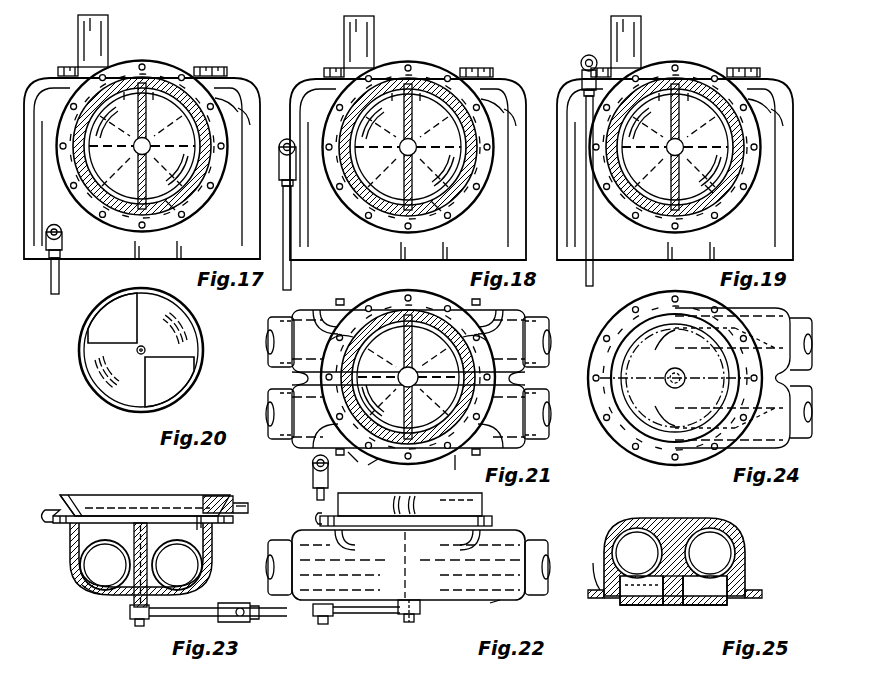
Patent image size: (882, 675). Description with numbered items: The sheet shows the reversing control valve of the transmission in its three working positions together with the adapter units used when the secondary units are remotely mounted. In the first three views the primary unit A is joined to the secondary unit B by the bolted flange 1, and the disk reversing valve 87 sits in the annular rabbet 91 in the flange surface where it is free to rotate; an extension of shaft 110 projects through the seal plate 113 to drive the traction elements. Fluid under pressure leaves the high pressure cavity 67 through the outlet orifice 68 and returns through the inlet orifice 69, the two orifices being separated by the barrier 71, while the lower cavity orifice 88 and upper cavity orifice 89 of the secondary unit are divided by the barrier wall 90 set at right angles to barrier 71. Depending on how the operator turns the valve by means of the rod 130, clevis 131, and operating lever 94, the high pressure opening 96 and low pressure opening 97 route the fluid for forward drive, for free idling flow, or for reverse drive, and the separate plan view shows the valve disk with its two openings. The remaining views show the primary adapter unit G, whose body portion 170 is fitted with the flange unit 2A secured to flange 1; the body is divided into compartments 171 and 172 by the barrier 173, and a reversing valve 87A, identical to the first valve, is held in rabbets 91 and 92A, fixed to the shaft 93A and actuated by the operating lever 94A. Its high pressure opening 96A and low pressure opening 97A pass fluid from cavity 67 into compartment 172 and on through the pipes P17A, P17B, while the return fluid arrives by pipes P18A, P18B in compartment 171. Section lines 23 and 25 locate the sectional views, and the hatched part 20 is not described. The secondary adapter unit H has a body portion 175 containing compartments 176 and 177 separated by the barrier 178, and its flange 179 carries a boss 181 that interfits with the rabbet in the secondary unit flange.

In FIG. 17, the flange 1 is at (226, 106).
In FIG. 18, the flange 1 is at (492, 106).
In FIG. 19, the flange 1 is at (752, 105).
In FIG. 21, the flange 1 is at (442, 307).
In FIG. 23, the flange 1 is at (58, 511).
In FIG. 22, the flange 1 is at (490, 519).
In FIG. 17, the primary unit A is at (240, 110).
In FIG. 18, the primary unit A is at (506, 110).
In FIG. 19, the primary unit A is at (766, 109).
In FIG. 23, the primary unit A is at (238, 504).
In FIG. 17, the secondary unit B is at (256, 128).
In FIG. 18, the secondary unit B is at (522, 128).
In FIG. 19, the secondary unit B is at (798, 127).
In FIG. 21, the flange unit 2A is at (422, 299).
In FIG. 23, the flange unit 2A is at (62, 523).
In FIG. 22, the flange unit 2A is at (508, 528).
In FIG. 23, the hatched block 20 is at (214, 496).
In FIG. 21, the section line 23 is at (407, 292).
In FIG. 23, the section line 23 is at (249, 493).
In FIG. 24, the section line 25 is at (675, 290).
In FIG. 23, the high pressure cavity 67 is at (106, 504).
In FIG. 22, the high pressure cavity 67 is at (324, 516).
In FIG. 17, the outlet orifice 68 is at (124, 92).
In FIG. 18, the outlet orifice 68 is at (392, 93).
In FIG. 19, the outlet orifice 68 is at (659, 100).
In FIG. 17, the inlet orifice 69 is at (153, 92).
In FIG. 18, the inlet orifice 69 is at (420, 93).
In FIG. 19, the inlet orifice 69 is at (688, 100).
In FIG. 22, the inlet orifice 69 is at (500, 507).
In FIG. 17, the barrier 71 is at (128, 114).
In FIG. 18, the barrier 71 is at (403, 122).
In FIG. 19, the barrier 71 is at (680, 132).
In FIG. 22, the barrier 71 is at (397, 507).
In FIG. 17, the reversing valve 87 is at (170, 103).
In FIG. 18, the reversing valve 87 is at (433, 103).
In FIG. 19, the reversing valve 87 is at (697, 98).
In FIG. 20, the reversing valve 87 is at (197, 313).
In FIG. 21, the reversing valve 87A is at (373, 352).
In FIG. 23, the reversing valve 87A is at (118, 514).
In FIG. 22, the reversing valve 87A is at (410, 559).
In FIG. 17, the lower cavity orifice 88 is at (120, 132).
In FIG. 18, the lower cavity orifice 88 is at (375, 131).
In FIG. 19, the lower cavity orifice 88 is at (652, 141).
In FIG. 17, the upper cavity orifice 89 is at (175, 210).
In FIG. 18, the upper cavity orifice 89 is at (441, 211).
In FIG. 19, the upper cavity orifice 89 is at (713, 193).
In FIG. 17, the barrier wall 90 is at (186, 151).
In FIG. 18, the barrier wall 90 is at (452, 152).
In FIG. 19, the barrier wall 90 is at (738, 153).
In FIG. 17, the annular rabbet 91 is at (214, 142).
In FIG. 18, the annular rabbet 91 is at (488, 141).
In FIG. 19, the annular rabbet 91 is at (740, 134).
In FIG. 23, the annular rabbet 91 is at (202, 515).
In FIG. 23, the annular rabbet 92A is at (196, 515).
In FIG. 23, the shaft 93A is at (137, 584).
In FIG. 22, the shaft 93A is at (414, 590).
In FIG. 17, the operating lever 94 is at (80, 217).
In FIG. 18, the operating lever 94 is at (300, 140).
In FIG. 19, the operating lever 94 is at (595, 100).
In FIG. 22, the operating lever 94A is at (358, 621).
In FIG. 17, the high pressure opening 96 is at (124, 158).
In FIG. 18, the high pressure opening 96 is at (393, 160).
In FIG. 19, the high pressure opening 96 is at (656, 134).
In FIG. 20, the high pressure opening 96 is at (98, 329).
In FIG. 21, the high pressure opening 96A is at (363, 398).
In FIG. 17, the low pressure opening 97 is at (190, 132).
In FIG. 18, the low pressure opening 97 is at (460, 137).
In FIG. 19, the low pressure opening 97 is at (725, 161).
In FIG. 20, the low pressure opening 97 is at (176, 381).
In FIG. 21, the low pressure opening 97A is at (467, 360).
In FIG. 17, the shaft 110 is at (107, 24).
In FIG. 18, the shaft 110 is at (375, 24).
In FIG. 19, the shaft 110 is at (641, 21).
In FIG. 17, the seal plate 113 is at (58, 73).
In FIG. 18, the seal plate 113 is at (326, 74).
In FIG. 19, the seal plate 113 is at (590, 74).
In FIG. 17, the rod 130 is at (62, 286).
In FIG. 18, the rod 130 is at (292, 277).
In FIG. 19, the rod 130 is at (595, 277).
In FIG. 21, the rod 130 is at (316, 499).
In FIG. 17, the clevis 131 is at (62, 264).
In FIG. 18, the clevis 131 is at (296, 184).
In FIG. 19, the clevis 131 is at (594, 55).
In FIG. 21, the clevis 131 is at (313, 477).
In FIG. 21, the body portion 170 is at (296, 311).
In FIG. 23, the body portion 170 is at (72, 573).
In FIG. 22, the body portion 170 is at (528, 539).
In FIG. 21, the compartment 171 is at (327, 339).
In FIG. 23, the compartment 171 is at (100, 531).
In FIG. 21, the compartment 172 is at (376, 462).
In FIG. 23, the compartment 172 is at (183, 533).
In FIG. 21, the barrier 173 is at (488, 346).
In FIG. 23, the barrier 173 is at (152, 533).
In FIG. 25, the body portion 175 is at (743, 547).
In FIG. 24, the compartment 176 is at (612, 318).
In FIG. 25, the compartment 176 is at (655, 593).
In FIG. 24, the compartment 177 is at (628, 432).
In FIG. 25, the compartment 177 is at (713, 591).
In FIG. 25, the barrier 178 is at (670, 606).
In FIG. 25, the flange 179 is at (593, 577).
In FIG. 25, the boss 181 is at (615, 607).
In FIG. 21, the primary adapter unit G is at (456, 465).
In FIG. 23, the primary adapter unit G is at (79, 593).
In FIG. 22, the primary adapter unit G is at (488, 605).
In FIG. 24, the secondary adapter unit H is at (630, 461).
In FIG. 25, the secondary adapter unit H is at (730, 523).
In FIG. 21, the pipe P17A is at (268, 409).
In FIG. 21, the pipe P17B is at (548, 409).
In FIG. 21, the pipe P18A is at (268, 338).
In FIG. 21, the pipe P18B is at (548, 342).